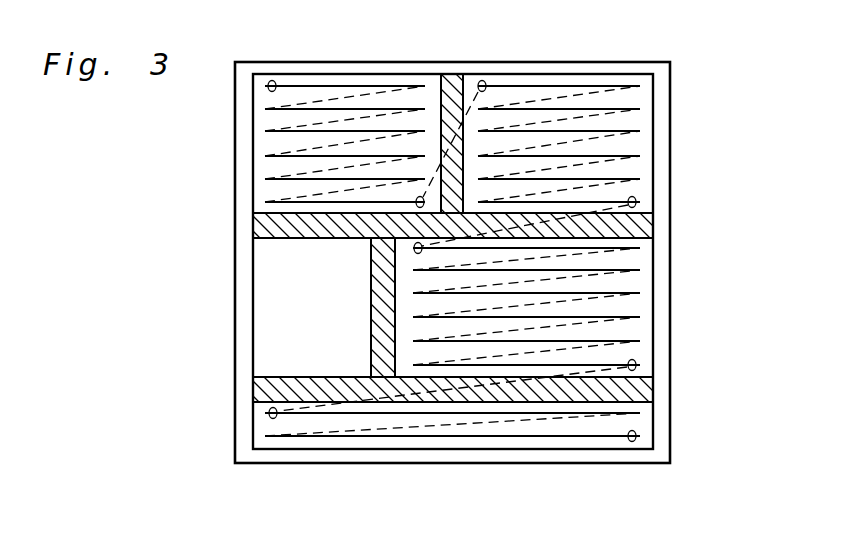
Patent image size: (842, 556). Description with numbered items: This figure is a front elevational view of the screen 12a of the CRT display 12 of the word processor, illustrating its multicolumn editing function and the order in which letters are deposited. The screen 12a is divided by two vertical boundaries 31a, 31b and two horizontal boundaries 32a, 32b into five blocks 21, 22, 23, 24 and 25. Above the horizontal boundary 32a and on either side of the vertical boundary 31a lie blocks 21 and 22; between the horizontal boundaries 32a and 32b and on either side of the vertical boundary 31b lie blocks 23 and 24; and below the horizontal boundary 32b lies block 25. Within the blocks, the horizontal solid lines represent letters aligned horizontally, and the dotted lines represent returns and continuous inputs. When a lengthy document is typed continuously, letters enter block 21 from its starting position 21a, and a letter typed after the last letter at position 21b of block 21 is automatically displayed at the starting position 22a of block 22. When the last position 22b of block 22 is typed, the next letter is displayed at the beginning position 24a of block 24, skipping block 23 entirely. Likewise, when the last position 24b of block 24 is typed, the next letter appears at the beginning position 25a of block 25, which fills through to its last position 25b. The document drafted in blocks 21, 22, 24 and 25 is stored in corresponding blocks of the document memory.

The CRT display 12 is at (672, 112).
The screen 12a is at (655, 172).
The block 21 is at (360, 80).
The starting position of block 21 21a is at (277, 78).
The last position of block 21 21b is at (416, 205).
The block 22 is at (603, 78).
The starting position of block 22 22a is at (486, 80).
The last position of block 22 22b is at (636, 200).
The block 23 is at (275, 287).
The block 24 is at (633, 325).
The beginning position of block 24 24a is at (414, 251).
The last position of block 24 24b is at (636, 362).
The block 25 is at (353, 437).
The beginning position of block 25 25a is at (268, 410).
The last position of block 25 25b is at (633, 441).
The vertical boundary 31a is at (443, 103).
The vertical boundary 31b is at (383, 357).
The horizontal boundary 32a is at (643, 220).
The horizontal boundary 32b is at (640, 390).